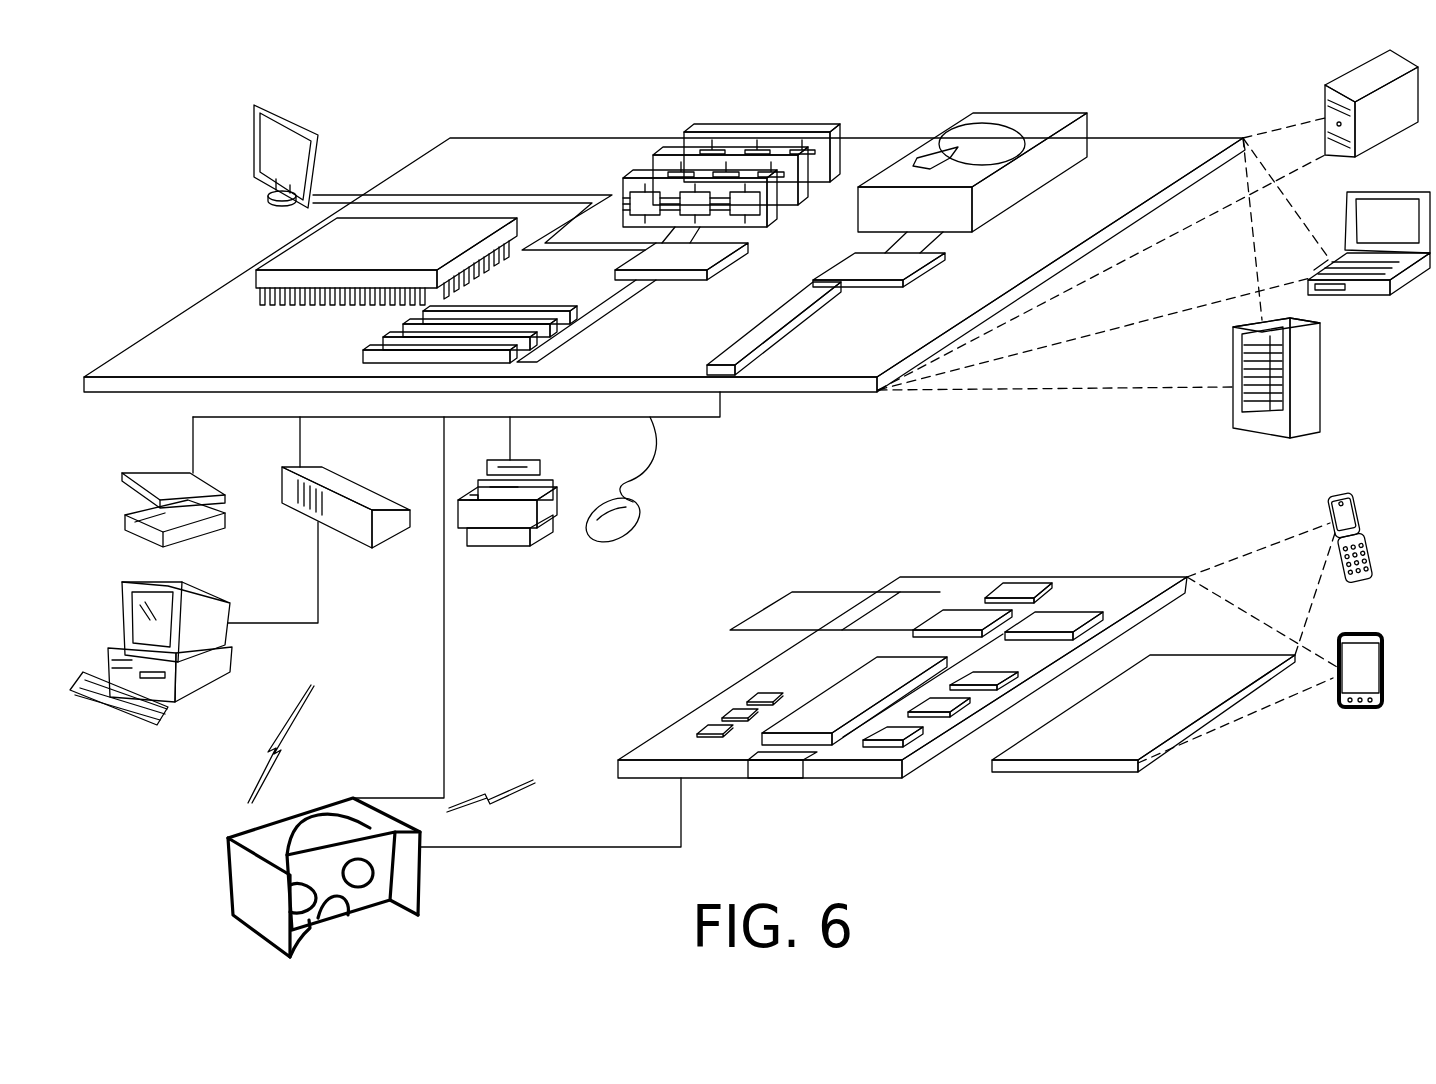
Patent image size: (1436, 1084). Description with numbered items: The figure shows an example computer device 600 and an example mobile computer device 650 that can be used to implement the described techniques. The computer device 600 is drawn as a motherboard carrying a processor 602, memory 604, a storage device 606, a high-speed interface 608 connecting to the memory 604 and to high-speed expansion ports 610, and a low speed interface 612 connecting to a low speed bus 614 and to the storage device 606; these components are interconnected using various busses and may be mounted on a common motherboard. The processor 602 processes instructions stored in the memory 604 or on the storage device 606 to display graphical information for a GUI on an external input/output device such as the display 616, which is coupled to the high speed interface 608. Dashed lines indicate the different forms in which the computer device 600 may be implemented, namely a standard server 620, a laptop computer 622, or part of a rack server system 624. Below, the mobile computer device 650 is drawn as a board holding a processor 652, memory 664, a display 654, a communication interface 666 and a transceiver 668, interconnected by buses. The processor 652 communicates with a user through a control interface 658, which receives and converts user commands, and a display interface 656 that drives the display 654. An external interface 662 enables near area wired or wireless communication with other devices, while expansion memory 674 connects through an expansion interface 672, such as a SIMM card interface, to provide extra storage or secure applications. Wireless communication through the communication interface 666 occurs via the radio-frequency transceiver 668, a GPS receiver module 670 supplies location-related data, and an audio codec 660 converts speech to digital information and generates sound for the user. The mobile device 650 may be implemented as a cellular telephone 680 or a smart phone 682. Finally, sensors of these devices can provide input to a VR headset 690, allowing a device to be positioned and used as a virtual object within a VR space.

The computer device 600 is at (396, 84).
The processor 602 is at (282, 251).
The memory 604 is at (767, 130).
The storage device 606 is at (1017, 112).
The high-speed interface 608 is at (695, 254).
The high-speed expansion ports 610 is at (390, 335).
The low speed interface 612 is at (848, 260).
The low speed bus 614 is at (730, 357).
The display 616 is at (258, 104).
The standard server 620 is at (1347, 80).
The laptop computer 622 is at (1407, 188).
The rack server system 624 is at (1322, 377).
The mobile computer device 650 is at (1231, 773).
The processor 652 is at (818, 707).
The display 654 is at (1185, 673).
The display interface 656 is at (903, 732).
The control interface 658 is at (943, 705).
The audio codec 660 is at (987, 673).
The external interface 662 is at (775, 763).
The memory 664 is at (728, 713).
The communication interface 666 is at (962, 612).
The transceiver 668 is at (1062, 613).
The GPS receiver module 670 is at (1020, 587).
The expansion interface 672 is at (882, 592).
The expansion memory 674 is at (792, 592).
The cellular telephone 680 is at (1342, 495).
The smart phone 682 is at (1350, 633).
The VR headset 690 is at (440, 862).